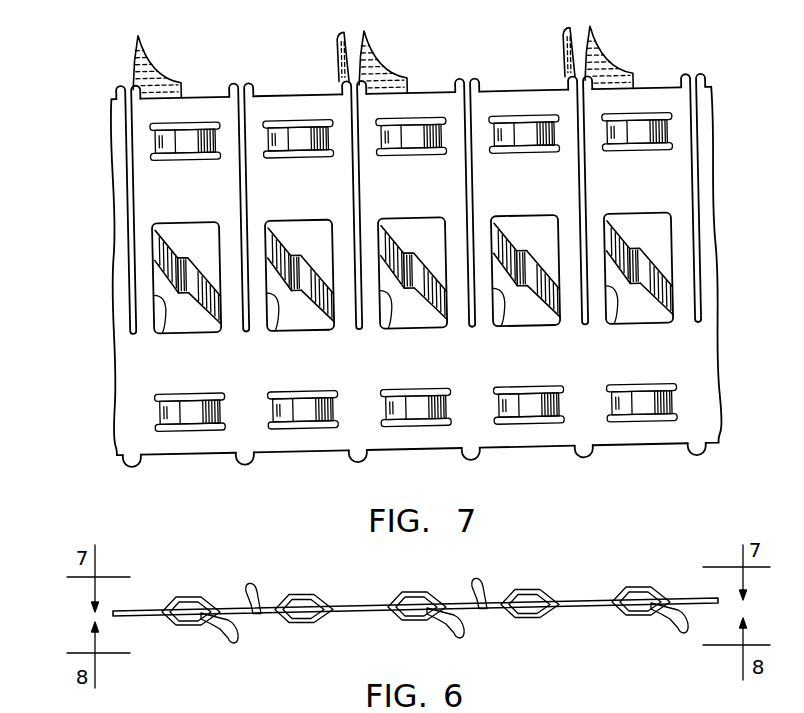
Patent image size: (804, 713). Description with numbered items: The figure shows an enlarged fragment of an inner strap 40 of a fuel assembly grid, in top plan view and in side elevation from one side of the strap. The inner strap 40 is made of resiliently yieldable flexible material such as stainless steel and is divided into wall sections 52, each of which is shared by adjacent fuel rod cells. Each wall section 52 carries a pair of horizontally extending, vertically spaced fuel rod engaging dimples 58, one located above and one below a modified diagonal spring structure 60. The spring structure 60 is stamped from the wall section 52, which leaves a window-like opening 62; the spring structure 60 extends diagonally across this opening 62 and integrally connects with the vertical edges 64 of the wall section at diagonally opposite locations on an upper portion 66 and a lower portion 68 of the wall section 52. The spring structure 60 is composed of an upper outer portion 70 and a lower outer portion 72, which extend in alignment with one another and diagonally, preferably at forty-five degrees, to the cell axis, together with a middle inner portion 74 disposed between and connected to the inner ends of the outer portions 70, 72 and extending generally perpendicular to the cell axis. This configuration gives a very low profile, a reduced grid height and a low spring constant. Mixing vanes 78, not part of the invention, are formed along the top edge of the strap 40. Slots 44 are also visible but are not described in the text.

In FIG. 7, the inner strap 40 is at (716, 364).
In FIG. 6, the inner strap 40 is at (700, 597).
In FIG. 7, the slots 44 is at (241, 112).
In FIG. 7, the wall section 52 is at (224, 441).
In FIG. 6, the wall section 52 is at (135, 618).
In FIG. 7, the fuel rod engaging dimple 58 is at (301, 133).
In FIG. 6, the fuel rod engaging dimple 58 is at (187, 622).
In FIG. 7, the modified diagonal spring structure 60 is at (183, 296).
In FIG. 6, the modified diagonal spring structure 60 is at (193, 598).
In FIG. 7, the window-like opening 62 is at (197, 236).
In FIG. 7, the vertical edge 64 is at (161, 310).
In FIG. 7, the upper portion 66 is at (179, 181).
In FIG. 7, the lower portion 68 is at (176, 386).
In FIG. 7, the upper outer portion 70 is at (167, 247).
In FIG. 7, the lower outer portion 72 is at (210, 312).
In FIG. 7, the middle inner portion 74 is at (186, 272).
In FIG. 7, the mixing vane 78 is at (143, 36).
In FIG. 6, the mixing vane 78 is at (236, 632).